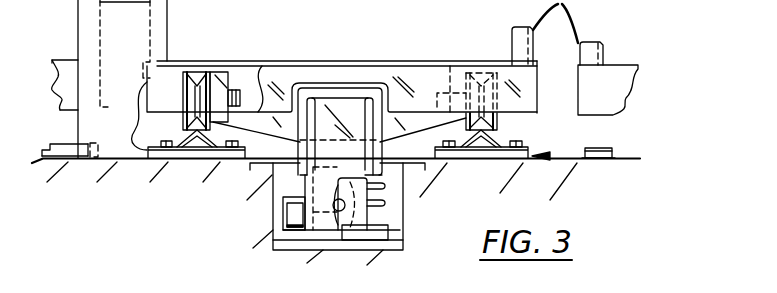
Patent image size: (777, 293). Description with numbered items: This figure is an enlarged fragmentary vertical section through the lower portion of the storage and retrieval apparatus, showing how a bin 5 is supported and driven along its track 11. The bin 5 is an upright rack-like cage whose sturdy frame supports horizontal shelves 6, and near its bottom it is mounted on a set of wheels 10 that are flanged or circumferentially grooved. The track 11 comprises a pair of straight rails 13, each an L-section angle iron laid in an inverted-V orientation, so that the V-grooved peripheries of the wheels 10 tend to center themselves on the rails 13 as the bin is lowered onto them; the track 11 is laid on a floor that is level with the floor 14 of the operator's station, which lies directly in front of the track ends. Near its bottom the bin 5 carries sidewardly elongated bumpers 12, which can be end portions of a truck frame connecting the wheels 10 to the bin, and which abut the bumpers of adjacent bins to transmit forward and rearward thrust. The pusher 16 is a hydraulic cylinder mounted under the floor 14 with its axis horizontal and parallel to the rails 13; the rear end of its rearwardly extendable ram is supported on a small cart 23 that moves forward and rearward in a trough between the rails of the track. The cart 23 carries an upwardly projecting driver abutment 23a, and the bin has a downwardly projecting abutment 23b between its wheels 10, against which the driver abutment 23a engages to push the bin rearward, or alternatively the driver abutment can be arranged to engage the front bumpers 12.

The bin 5 is at (555, 21).
The shelves 6 is at (432, 62).
The wheels 10 is at (193, 77).
The track 11 is at (550, 156).
The bumpers 12 is at (578, 85).
The rails 13 is at (175, 140).
The floor 14 is at (623, 162).
The pusher 16 is at (357, 215).
The cart 23 is at (305, 183).
The driver abutment 23a is at (350, 90).
The abutment 23b is at (388, 118).